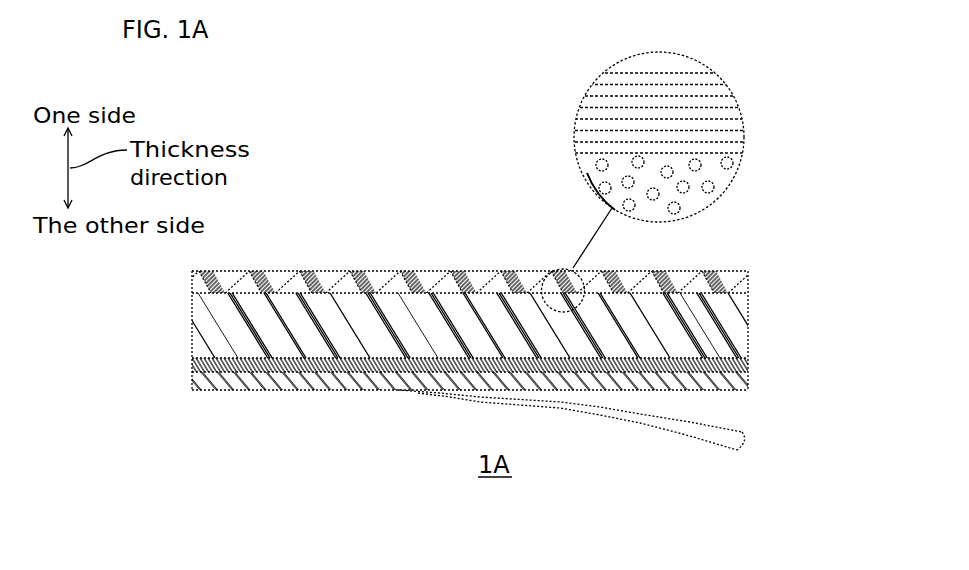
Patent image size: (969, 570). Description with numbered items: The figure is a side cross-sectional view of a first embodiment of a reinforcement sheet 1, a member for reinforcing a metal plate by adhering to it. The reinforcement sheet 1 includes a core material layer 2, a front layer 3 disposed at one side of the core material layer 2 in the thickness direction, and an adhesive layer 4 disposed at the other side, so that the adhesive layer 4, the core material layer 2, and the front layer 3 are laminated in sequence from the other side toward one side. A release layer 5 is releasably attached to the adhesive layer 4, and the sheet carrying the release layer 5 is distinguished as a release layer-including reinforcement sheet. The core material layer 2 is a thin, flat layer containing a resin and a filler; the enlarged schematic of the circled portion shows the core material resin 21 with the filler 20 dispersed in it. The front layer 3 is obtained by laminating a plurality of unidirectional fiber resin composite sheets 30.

The reinforcement sheet 1 is at (523, 236).
The core material layer 2 is at (578, 170).
The front layer 3 is at (588, 92).
The adhesive layer 4 is at (748, 367).
The release layer 5 is at (748, 383).
The filler 20 is at (707, 172).
The core material resin 21 is at (695, 198).
The unidirectional fiber resin composite sheets 30 is at (702, 128).